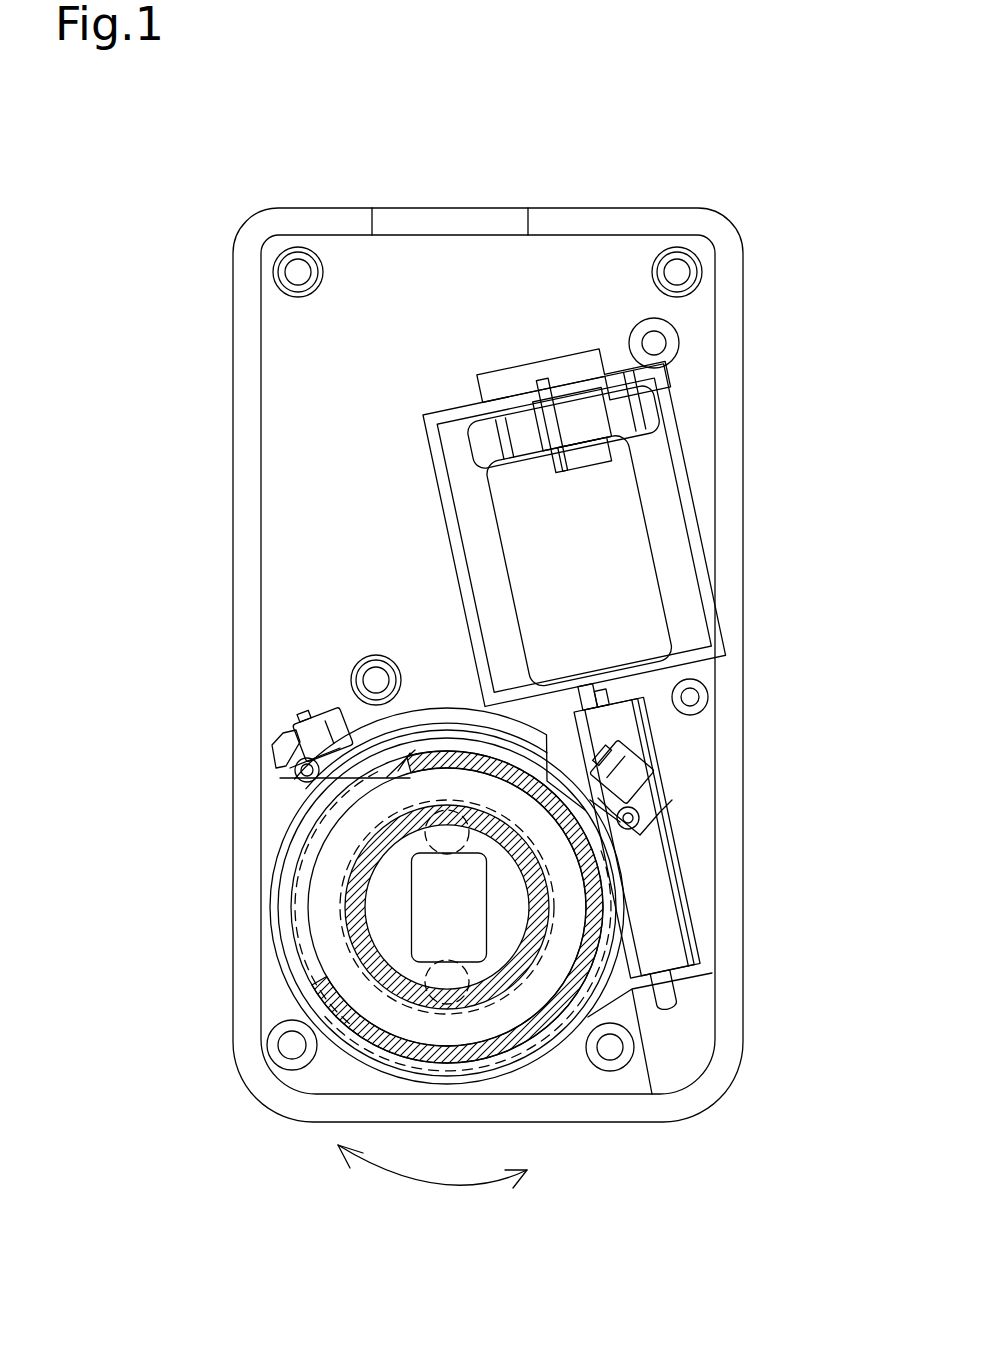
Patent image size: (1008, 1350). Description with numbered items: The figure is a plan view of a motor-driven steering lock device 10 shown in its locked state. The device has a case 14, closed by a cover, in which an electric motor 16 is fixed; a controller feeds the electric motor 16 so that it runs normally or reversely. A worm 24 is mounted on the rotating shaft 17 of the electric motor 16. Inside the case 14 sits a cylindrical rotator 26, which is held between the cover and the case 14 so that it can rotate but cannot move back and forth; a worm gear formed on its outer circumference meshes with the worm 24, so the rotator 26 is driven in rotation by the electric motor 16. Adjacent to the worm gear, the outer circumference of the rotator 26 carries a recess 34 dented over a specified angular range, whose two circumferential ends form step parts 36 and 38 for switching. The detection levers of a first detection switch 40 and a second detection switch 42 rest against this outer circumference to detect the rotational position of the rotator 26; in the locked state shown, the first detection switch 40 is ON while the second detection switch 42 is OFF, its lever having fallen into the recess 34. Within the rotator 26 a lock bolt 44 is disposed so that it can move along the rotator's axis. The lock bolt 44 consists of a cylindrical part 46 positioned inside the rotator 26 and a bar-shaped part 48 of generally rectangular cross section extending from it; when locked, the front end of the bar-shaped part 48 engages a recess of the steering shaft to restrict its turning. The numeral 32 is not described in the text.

The motor-driven steering lock device 10 is at (752, 200).
The case 14 is at (727, 340).
The electric motor 16 is at (572, 415).
The rotating shaft 17 is at (680, 995).
The worm 24 is at (690, 910).
The rotator 26 is at (560, 1033).
The hidden ring element 32 is at (350, 862).
The recess 34 is at (305, 886).
The step part 36 is at (330, 1008).
The step part 38 is at (425, 745).
The first detection switch 40 is at (660, 786).
The second detection switch 42 is at (320, 722).
The lock bolt 44 is at (432, 921).
The cylindrical part 46 is at (377, 907).
The bar-shaped part 48 is at (400, 970).